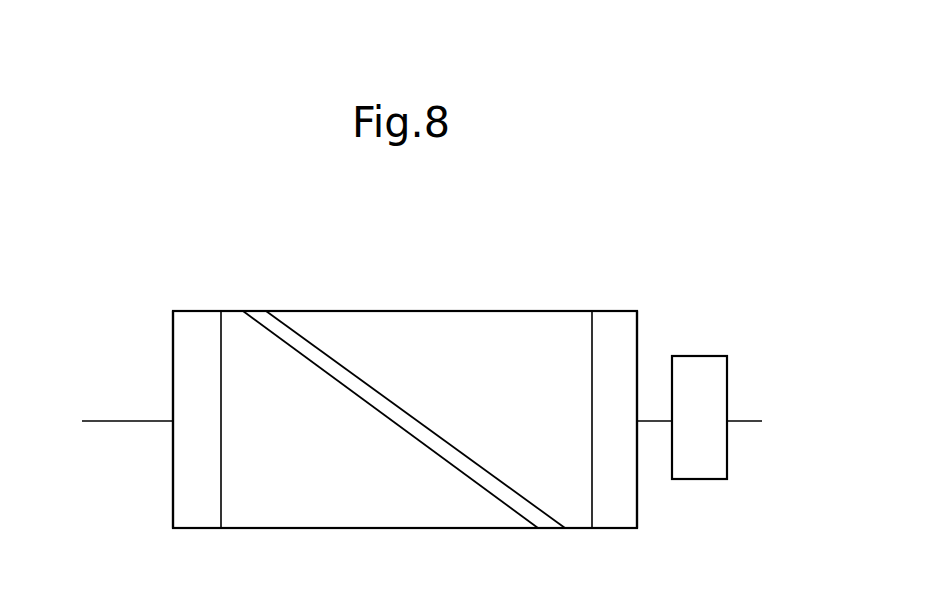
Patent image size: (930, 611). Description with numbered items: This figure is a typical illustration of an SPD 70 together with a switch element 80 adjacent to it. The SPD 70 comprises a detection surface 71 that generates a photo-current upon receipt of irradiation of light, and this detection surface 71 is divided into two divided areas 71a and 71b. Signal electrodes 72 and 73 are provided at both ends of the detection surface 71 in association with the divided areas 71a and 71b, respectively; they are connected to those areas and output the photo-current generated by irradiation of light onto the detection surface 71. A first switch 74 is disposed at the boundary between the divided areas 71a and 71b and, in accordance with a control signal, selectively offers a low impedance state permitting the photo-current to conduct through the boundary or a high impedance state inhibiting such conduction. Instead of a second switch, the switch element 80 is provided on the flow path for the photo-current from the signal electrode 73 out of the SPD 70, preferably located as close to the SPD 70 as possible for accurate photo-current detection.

The SPD 70 is at (223, 291).
The detection surface 71 is at (483, 291).
The divided area 71a is at (312, 526).
The divided area 71b is at (548, 325).
The signal electrode 72 is at (200, 526).
The signal electrode 73 is at (625, 526).
The first switch 74 is at (462, 463).
The switch element 80 is at (688, 356).